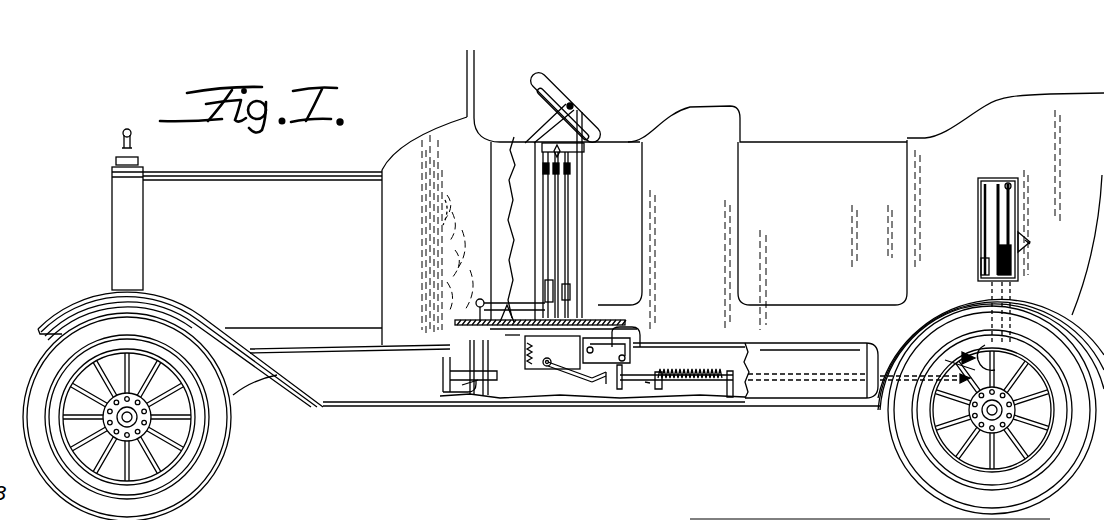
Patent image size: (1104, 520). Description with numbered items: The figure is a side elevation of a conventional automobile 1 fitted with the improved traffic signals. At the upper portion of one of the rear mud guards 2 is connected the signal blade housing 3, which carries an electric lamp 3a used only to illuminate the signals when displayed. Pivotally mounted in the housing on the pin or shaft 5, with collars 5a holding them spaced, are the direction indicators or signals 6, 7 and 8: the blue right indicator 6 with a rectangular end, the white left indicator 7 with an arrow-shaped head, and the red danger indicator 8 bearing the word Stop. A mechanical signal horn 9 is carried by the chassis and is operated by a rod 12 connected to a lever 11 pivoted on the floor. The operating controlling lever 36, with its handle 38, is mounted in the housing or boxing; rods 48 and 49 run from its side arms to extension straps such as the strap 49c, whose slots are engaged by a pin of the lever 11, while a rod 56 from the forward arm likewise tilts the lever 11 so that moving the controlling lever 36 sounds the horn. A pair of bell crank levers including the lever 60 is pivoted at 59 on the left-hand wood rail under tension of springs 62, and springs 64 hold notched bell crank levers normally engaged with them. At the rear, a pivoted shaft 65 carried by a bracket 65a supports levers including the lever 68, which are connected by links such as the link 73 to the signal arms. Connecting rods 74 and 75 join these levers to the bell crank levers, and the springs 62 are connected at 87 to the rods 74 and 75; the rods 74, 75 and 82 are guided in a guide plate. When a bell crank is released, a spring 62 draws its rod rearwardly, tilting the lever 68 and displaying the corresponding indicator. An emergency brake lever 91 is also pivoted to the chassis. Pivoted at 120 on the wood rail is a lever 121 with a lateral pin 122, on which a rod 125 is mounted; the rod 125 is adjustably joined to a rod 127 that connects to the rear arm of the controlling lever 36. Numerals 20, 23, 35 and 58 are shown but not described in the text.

The automobile 1 is at (799, 190).
The rear mud guard 2 is at (1042, 296).
The signal blade housing 3 is at (1030, 240).
The electric lamp 3a is at (1028, 246).
The pin or shaft 5 is at (1009, 237).
The collars 5a is at (1021, 258).
The right direction indicator 6 is at (983, 197).
The left direction indicator 7 is at (996, 212).
The danger indicator 8 is at (1008, 182).
The signal horn 9 is at (462, 385).
The lever 11 is at (500, 300).
The rod 12 is at (470, 350).
The shaft 20 is at (518, 336).
The rod 23 is at (492, 326).
The steering column bracket 35 is at (553, 153).
The operating controlling lever 36 is at (585, 150).
The handle 38 is at (577, 117).
The rod 48 is at (641, 348).
The rod 49 is at (559, 260).
The extension strap or bar 49c is at (571, 288).
The rod 56 is at (551, 221).
The rod end block 58 is at (545, 296).
The pivot 59 is at (606, 350).
The bell crank lever 60 is at (628, 376).
The springs 62 is at (697, 368).
The springs 64 is at (548, 344).
The pivoted shaft 65 is at (983, 340).
The bracket 65a is at (960, 352).
The lever 68 is at (962, 385).
The link 73 is at (1010, 318).
The connecting rod or link 74 is at (830, 398).
The connecting rod or link 75 is at (816, 378).
The rod 82 is at (647, 383).
The spring connection 87 is at (628, 372).
The emergency brake lever 91 is at (442, 242).
The pivot 120 is at (537, 367).
The lever 121 is at (568, 374).
The lateral pin 122 is at (553, 371).
The rod 125 is at (582, 316).
The rod 127 is at (569, 237).